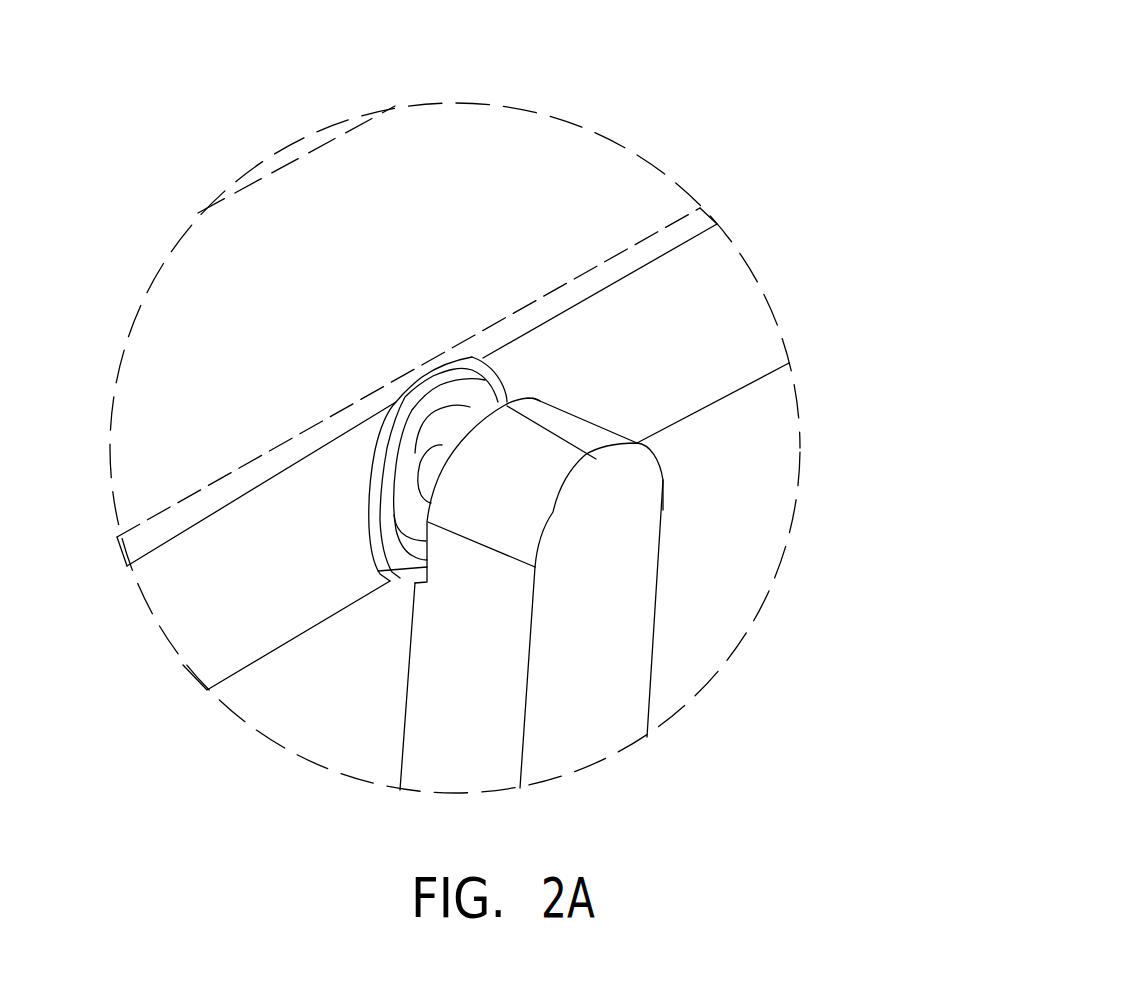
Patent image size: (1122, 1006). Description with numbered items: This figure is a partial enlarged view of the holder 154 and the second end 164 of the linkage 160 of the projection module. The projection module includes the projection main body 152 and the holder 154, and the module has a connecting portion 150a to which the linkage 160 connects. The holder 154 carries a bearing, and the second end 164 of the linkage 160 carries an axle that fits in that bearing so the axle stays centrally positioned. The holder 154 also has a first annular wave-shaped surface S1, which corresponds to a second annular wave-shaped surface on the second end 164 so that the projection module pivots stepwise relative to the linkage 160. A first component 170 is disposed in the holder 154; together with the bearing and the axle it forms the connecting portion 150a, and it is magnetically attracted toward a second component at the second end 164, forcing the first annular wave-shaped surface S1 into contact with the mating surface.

The projection main body 152 is at (563, 157).
The holder 154 is at (703, 307).
The connecting portion 150a is at (513, 375).
The second end 164 is at (640, 501).
The first component 170 is at (410, 498).
The linkage 160 is at (590, 742).
The first annular wave-shaped surface S1 is at (442, 403).